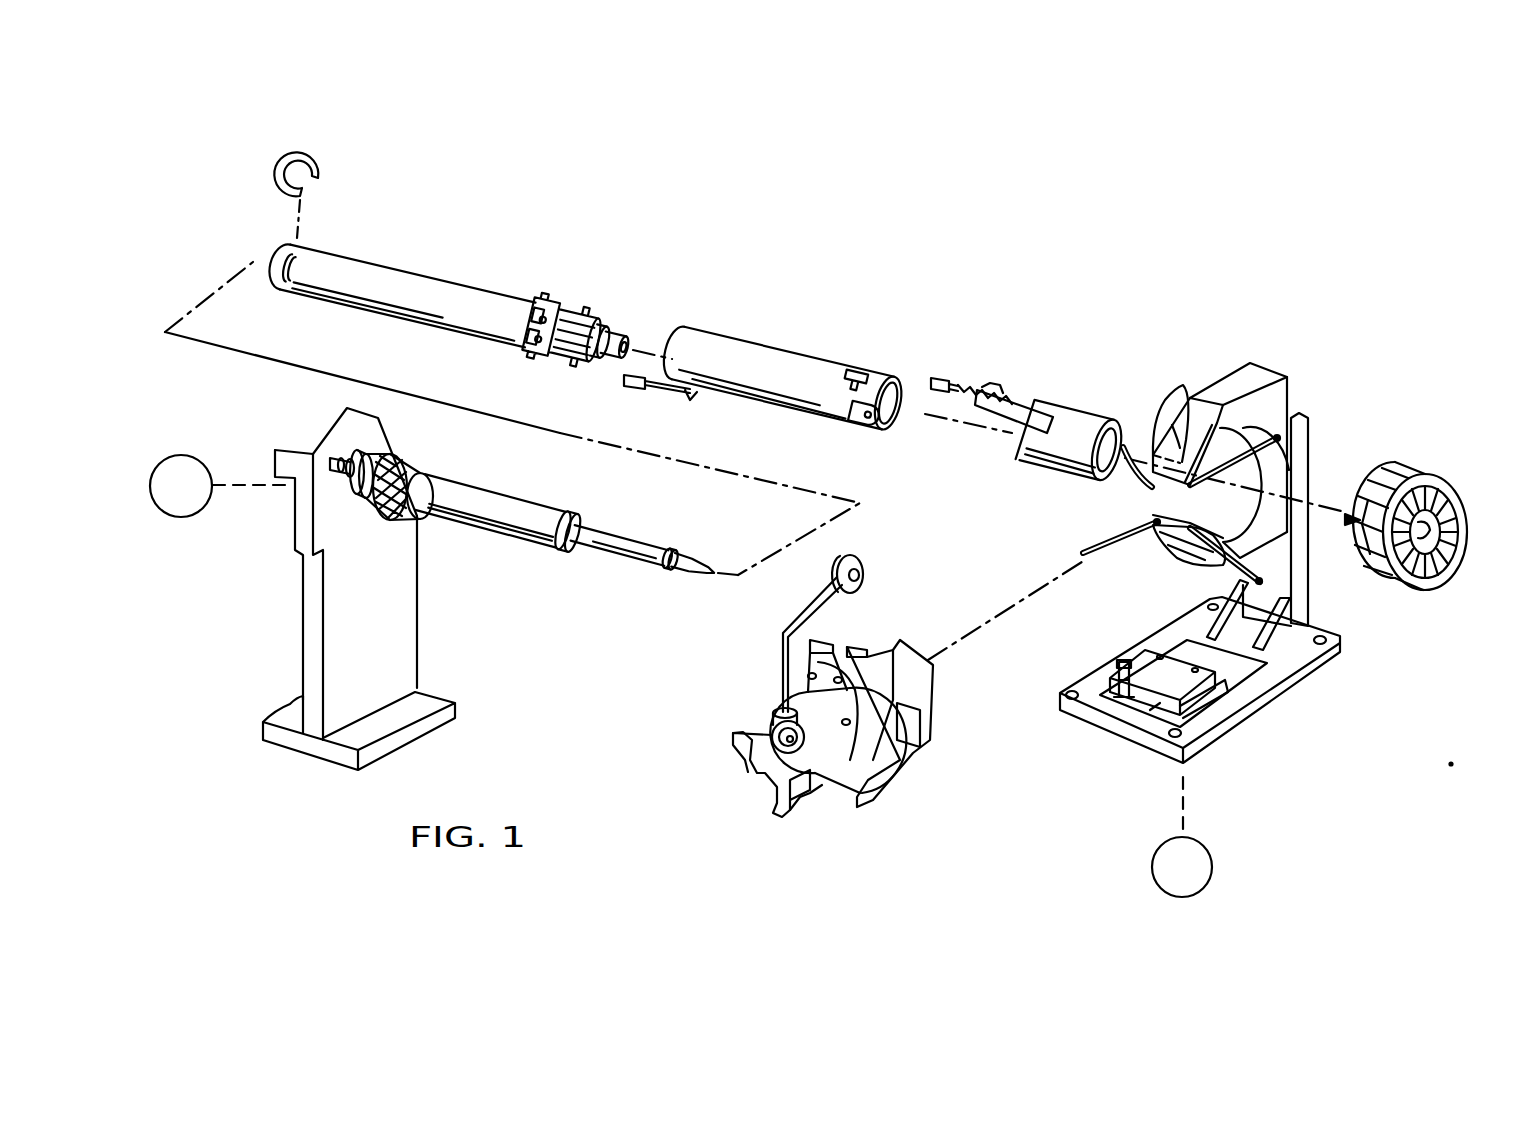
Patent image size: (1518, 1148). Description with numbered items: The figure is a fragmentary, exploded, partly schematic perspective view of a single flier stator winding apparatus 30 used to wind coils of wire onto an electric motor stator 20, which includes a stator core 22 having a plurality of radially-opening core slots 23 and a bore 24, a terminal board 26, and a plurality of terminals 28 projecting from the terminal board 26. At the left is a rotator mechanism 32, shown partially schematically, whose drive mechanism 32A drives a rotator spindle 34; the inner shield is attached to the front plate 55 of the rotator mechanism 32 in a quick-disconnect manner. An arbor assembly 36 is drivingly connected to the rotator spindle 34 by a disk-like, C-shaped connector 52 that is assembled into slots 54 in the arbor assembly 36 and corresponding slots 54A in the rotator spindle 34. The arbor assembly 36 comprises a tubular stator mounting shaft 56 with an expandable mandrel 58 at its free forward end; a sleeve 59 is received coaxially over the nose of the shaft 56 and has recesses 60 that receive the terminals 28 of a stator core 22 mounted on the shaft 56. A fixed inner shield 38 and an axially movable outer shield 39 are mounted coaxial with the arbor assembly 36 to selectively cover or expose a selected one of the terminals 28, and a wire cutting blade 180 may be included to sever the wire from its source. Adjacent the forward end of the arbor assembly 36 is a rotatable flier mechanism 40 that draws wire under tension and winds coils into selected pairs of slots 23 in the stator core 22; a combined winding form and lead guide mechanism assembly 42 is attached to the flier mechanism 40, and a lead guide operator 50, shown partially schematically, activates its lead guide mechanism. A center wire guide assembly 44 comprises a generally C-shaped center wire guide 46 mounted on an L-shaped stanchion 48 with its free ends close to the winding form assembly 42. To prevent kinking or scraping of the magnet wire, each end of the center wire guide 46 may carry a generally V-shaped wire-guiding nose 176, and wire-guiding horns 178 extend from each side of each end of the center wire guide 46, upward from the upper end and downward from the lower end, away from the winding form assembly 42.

The electric motor stator 20 is at (1422, 529).
The stator core 22 is at (1404, 470).
The core slots 23 is at (1408, 578).
The bore 24 is at (1455, 550).
The terminal board 26 is at (1372, 522).
The terminals 28 is at (1356, 525).
The single flier stator winding apparatus 30 is at (876, 300).
The rotator mechanism 32 is at (297, 589).
The drive mechanism 32A is at (185, 518).
The rotator spindle 34 is at (525, 532).
The arbor assembly 36 is at (517, 250).
The fixed inner shield 38 is at (752, 352).
The axially movable outer shield 39 is at (1070, 412).
The flier mechanism 40 is at (822, 810).
The winding form and lead guide mechanism assembly 42 is at (902, 778).
The center wire guide assembly 44 is at (1253, 454).
The center wire guide 46 is at (1234, 378).
The stanchion 48 is at (1302, 657).
The lead guide operator 50 is at (1140, 702).
The C-shaped connector 52 is at (320, 178).
The slots 54 is at (290, 302).
The slots 54A is at (430, 522).
The front plate 55 is at (388, 648).
The tubular stator mounting shaft 56 is at (395, 275).
The expandable mandrel 58 is at (612, 302).
The sleeve 59 is at (546, 340).
The recesses 60 is at (552, 316).
The wire-guiding nose 176 is at (1176, 420).
The wire-guiding horn 178 is at (1266, 440).
The wire cutting blade 180 is at (878, 375).